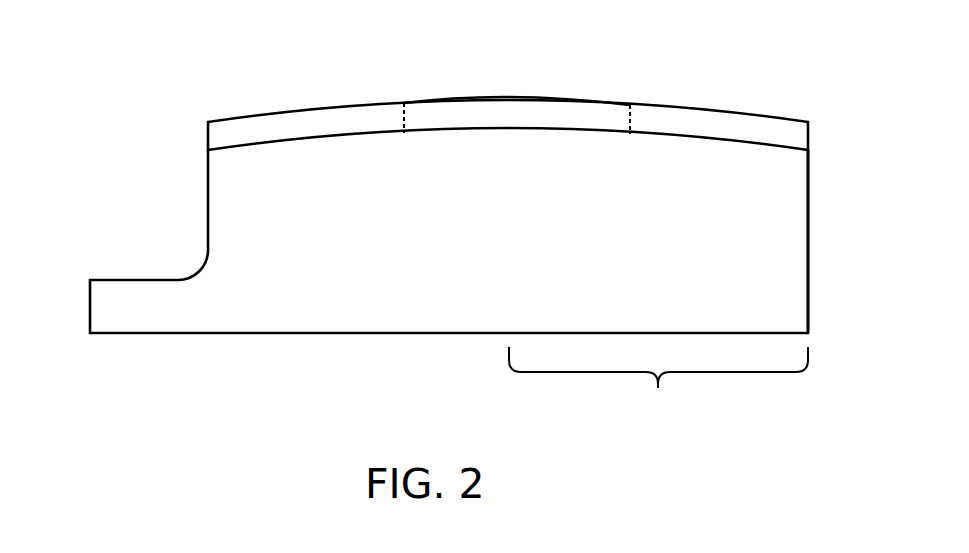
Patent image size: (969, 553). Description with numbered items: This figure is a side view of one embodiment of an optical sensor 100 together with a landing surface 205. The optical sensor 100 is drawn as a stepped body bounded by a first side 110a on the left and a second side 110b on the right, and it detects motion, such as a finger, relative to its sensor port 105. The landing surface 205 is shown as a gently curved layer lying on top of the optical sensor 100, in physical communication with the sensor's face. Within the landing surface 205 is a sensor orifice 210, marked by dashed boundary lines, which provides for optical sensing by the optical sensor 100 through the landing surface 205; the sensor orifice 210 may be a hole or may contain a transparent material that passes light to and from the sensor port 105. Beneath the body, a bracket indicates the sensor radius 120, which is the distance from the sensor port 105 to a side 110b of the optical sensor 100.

The optical sensor 100 is at (80, 193).
The sensor port 105 is at (508, 128).
The side 110a is at (208, 228).
The side 110b is at (808, 245).
The sensor radius 120 is at (658, 383).
The landing surface 205 is at (244, 113).
The sensor orifice 210 is at (405, 103).